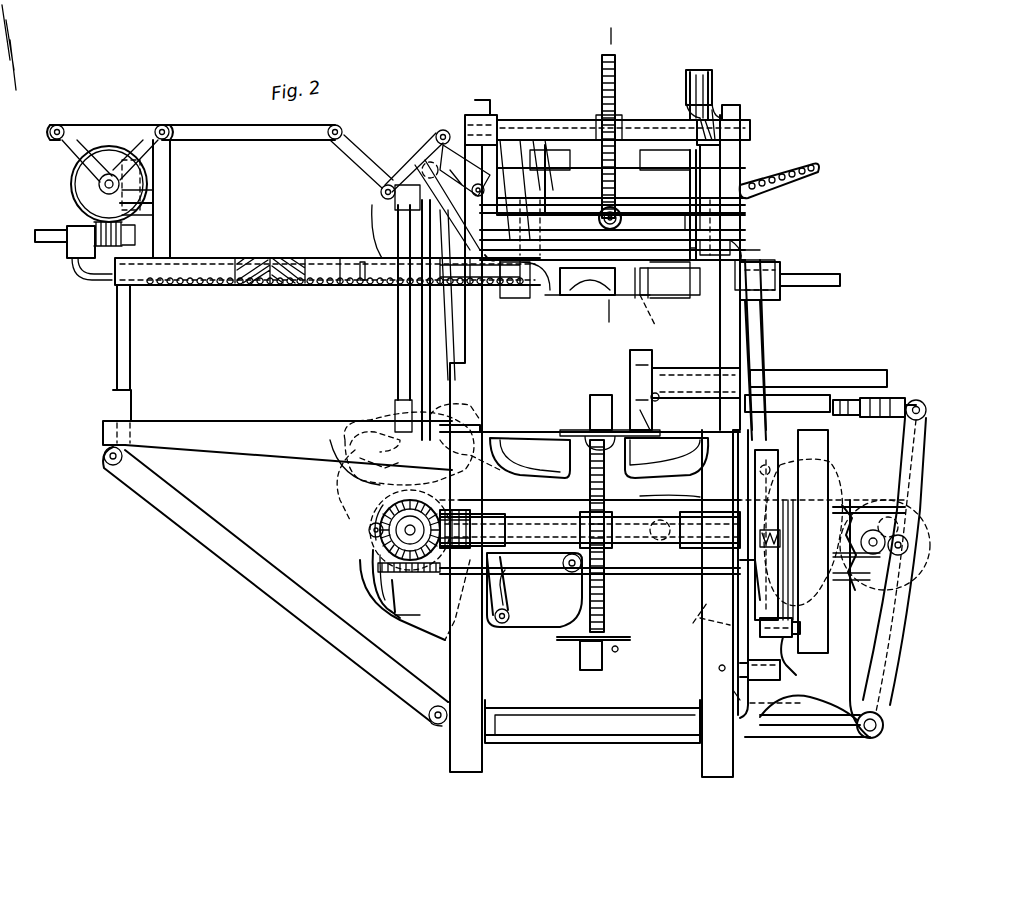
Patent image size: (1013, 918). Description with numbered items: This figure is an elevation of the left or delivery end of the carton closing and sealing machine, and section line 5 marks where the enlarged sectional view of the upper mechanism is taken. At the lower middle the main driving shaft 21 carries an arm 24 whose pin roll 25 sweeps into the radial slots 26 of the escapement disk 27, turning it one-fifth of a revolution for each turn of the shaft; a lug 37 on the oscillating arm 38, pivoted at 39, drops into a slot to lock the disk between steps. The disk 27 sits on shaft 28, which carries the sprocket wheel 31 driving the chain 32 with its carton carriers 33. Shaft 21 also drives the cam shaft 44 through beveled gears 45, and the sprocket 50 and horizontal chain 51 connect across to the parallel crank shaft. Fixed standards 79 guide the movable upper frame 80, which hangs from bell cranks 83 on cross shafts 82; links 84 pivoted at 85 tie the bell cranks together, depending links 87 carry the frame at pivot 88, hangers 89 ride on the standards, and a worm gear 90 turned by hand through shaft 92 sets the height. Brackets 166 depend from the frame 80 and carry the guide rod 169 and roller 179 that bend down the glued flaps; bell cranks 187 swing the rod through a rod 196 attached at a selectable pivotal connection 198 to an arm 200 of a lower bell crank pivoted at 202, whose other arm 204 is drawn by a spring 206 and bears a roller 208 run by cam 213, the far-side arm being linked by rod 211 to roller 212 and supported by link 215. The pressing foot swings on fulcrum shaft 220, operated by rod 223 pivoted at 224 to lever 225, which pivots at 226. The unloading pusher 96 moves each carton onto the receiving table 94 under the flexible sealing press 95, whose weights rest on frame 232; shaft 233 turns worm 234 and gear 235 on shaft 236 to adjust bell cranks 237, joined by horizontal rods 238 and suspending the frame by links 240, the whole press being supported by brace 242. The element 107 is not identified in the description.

The section line 5 is at (600, 179).
The main driving shaft 21 is at (550, 530).
The arm 24 is at (790, 565).
The pin roll 25 is at (720, 628).
The radial slots 26 is at (760, 560).
The escapement disk 27 is at (740, 600).
The shaft 28 is at (640, 545).
The sprocket wheel 31 is at (604, 612).
The chain 32 is at (610, 440).
The carton carriers 33 is at (597, 406).
The lug 37 is at (760, 635).
The oscillating arm 38 is at (786, 663).
The pivot 39 is at (745, 672).
The cam shaft 44 is at (380, 530).
The beveled gears 45 is at (372, 563).
The sprocket 50 is at (862, 512).
The chain 51 is at (640, 500).
The standards 79 is at (478, 334).
The upper frame 80 is at (718, 244).
The cross shafts 82 is at (640, 135).
The bell cranks 83 is at (716, 115).
The links 84 is at (712, 80).
The pivot 85 is at (720, 82).
The depending links 87 is at (690, 182).
The pivot 88 is at (683, 220).
The hangers 89 is at (700, 238).
The worm gear 90 is at (616, 92).
The shaft 92 is at (598, 212).
The receiving table 94 is at (243, 418).
The flexible sealing press 95 is at (334, 258).
The unloading pusher 96 is at (630, 365).
The guide 107 is at (586, 298).
The brackets 166 is at (782, 262).
The guide rod 169 is at (800, 276).
The roller 179 is at (658, 304).
The bell cranks 187 is at (780, 252).
The rod 196 is at (768, 328).
The pivotal connection 198 is at (758, 198).
The arm 200 is at (788, 470).
The pivot 202 is at (860, 470).
The bell crank arm 204 is at (885, 515).
The springs 206 is at (397, 585).
The roller 208 is at (372, 520).
The rod 211 is at (666, 528).
The roller 212 is at (445, 630).
The cam 213 is at (395, 500).
The link 215 is at (505, 580).
The fulcrum shaft 220 is at (460, 160).
The rod 223 is at (420, 357).
The pivot 224 is at (360, 474).
The lever 225 is at (340, 500).
The pivot 226 is at (490, 487).
The frame 232 is at (212, 287).
The shaft 233 is at (66, 244).
The worm 234 is at (102, 242).
The gear 235 is at (145, 205).
The shaft 236 is at (98, 186).
The bell cranks 237 is at (90, 160).
The horizontal rods 238 is at (220, 125).
The links 240 is at (163, 178).
The brace 242 is at (177, 503).